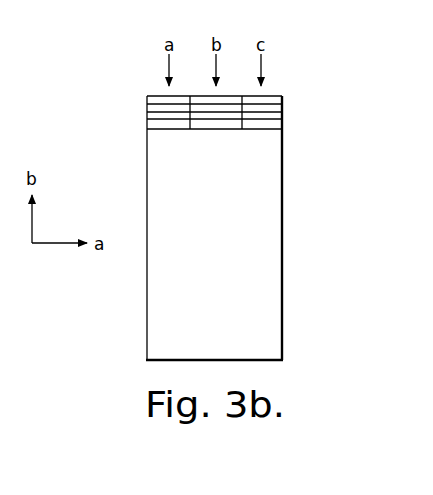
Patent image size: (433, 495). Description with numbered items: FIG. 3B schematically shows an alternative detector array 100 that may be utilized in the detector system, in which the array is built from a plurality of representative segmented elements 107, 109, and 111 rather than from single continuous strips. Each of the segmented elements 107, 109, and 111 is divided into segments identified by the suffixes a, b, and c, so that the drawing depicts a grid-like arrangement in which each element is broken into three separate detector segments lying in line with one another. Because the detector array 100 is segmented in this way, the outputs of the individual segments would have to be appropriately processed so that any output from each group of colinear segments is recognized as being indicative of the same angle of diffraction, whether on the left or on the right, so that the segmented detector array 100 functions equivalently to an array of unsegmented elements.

The detector array 100 is at (305, 327).
The segmented element 107 is at (279, 100).
The segmented element 109 is at (148, 107).
The segmented element 111 is at (279, 118).